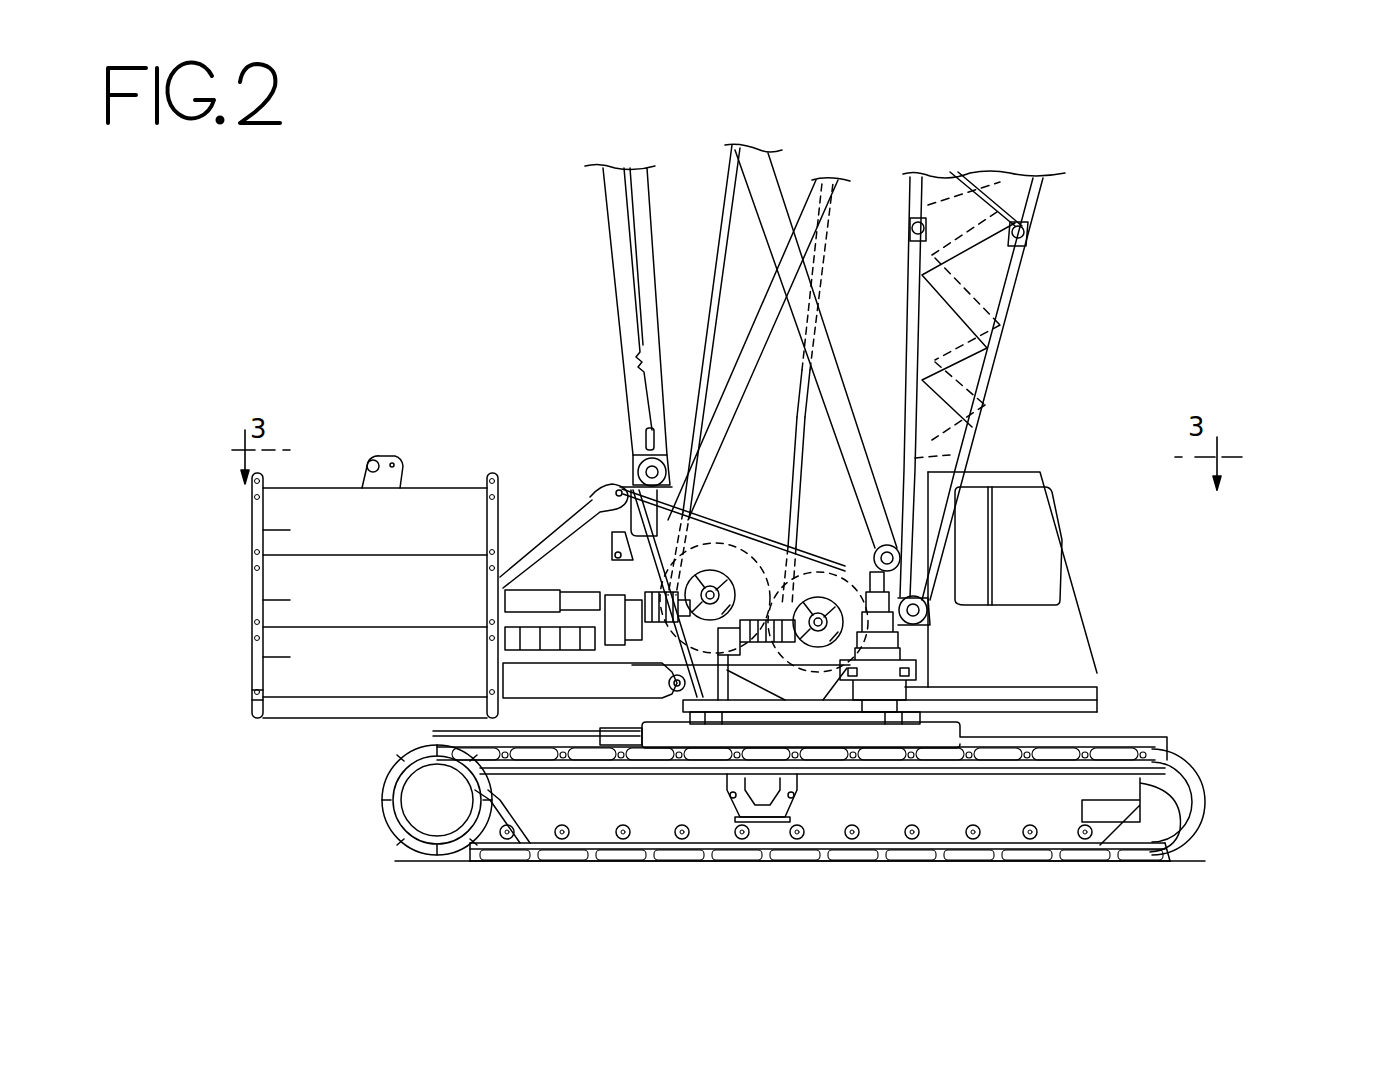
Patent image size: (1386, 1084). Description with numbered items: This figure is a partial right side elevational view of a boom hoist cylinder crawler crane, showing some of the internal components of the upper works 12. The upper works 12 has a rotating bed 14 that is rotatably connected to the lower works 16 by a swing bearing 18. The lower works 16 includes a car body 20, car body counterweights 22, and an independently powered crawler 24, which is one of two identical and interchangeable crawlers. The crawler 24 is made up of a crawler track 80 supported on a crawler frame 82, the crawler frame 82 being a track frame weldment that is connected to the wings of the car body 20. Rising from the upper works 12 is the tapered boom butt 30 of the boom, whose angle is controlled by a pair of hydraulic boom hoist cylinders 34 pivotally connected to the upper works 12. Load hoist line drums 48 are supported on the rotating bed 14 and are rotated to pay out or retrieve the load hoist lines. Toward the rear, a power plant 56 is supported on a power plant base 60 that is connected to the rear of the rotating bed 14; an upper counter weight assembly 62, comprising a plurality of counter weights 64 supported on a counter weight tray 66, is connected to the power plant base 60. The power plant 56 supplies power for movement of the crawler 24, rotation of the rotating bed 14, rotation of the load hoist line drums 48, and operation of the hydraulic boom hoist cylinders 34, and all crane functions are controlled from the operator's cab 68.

The upper works 12 is at (1149, 626).
The rotating bed 14 is at (925, 690).
The lower works 16 is at (1243, 801).
The swing bearing 18 is at (700, 737).
The car body 20 is at (865, 740).
The car body counterweights 22 is at (1160, 745).
The crawler 24 is at (1015, 862).
The boom butt 30 is at (1000, 307).
The hydraulic boom hoist cylinders 34 is at (610, 236).
The load hoist line drum 48 is at (821, 572).
The power plant 56 is at (537, 587).
The power plant base 60 is at (560, 675).
The upper counter weight assembly 62 is at (255, 693).
The counter weights 64 is at (290, 657).
The counter weight tray 66 is at (303, 705).
The operator's cab 68 is at (1046, 508).
The crawler track 80 is at (705, 863).
The crawler frame 82 is at (549, 816).